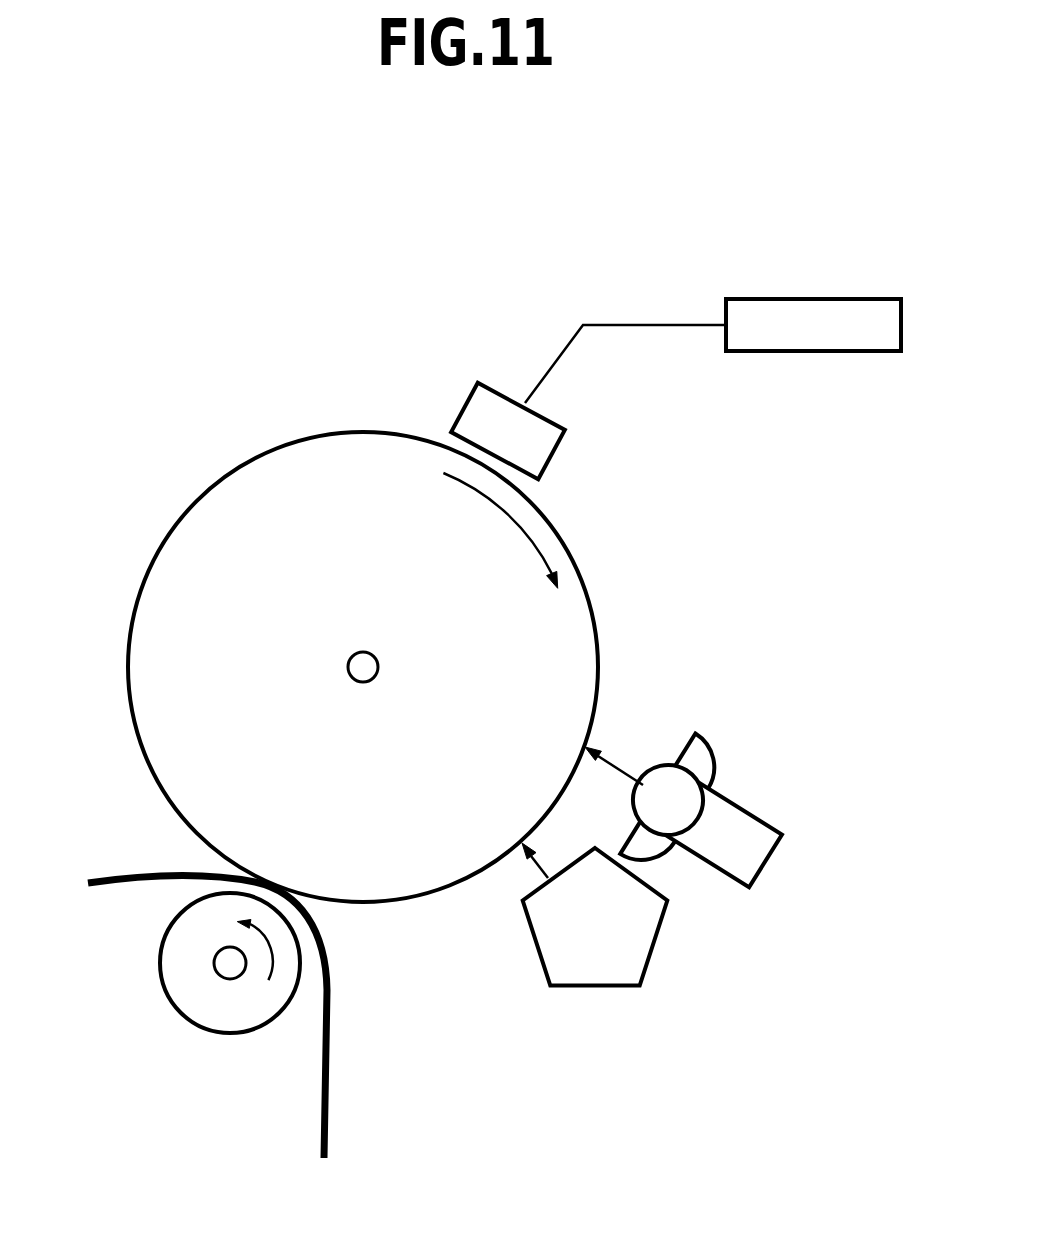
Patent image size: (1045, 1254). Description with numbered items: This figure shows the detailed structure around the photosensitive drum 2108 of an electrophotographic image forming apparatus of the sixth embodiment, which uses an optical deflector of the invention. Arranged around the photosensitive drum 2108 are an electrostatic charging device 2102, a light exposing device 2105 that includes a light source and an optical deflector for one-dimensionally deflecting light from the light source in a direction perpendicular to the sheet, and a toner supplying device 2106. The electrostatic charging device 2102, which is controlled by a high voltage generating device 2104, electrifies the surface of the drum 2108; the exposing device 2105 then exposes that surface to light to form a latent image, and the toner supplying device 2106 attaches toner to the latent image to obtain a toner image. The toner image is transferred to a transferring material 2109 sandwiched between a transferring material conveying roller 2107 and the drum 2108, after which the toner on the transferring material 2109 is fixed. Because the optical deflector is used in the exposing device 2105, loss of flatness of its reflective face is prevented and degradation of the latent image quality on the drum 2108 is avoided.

The electrostatic charging device 2102 is at (547, 418).
The high voltage generating device 2104 is at (812, 297).
The light exposing device 2105 is at (742, 810).
The toner supplying device 2106 is at (660, 935).
The transferring material conveying roller 2107 is at (163, 982).
The photosensitive drum 2108 is at (600, 650).
The transferring material 2109 is at (332, 1102).